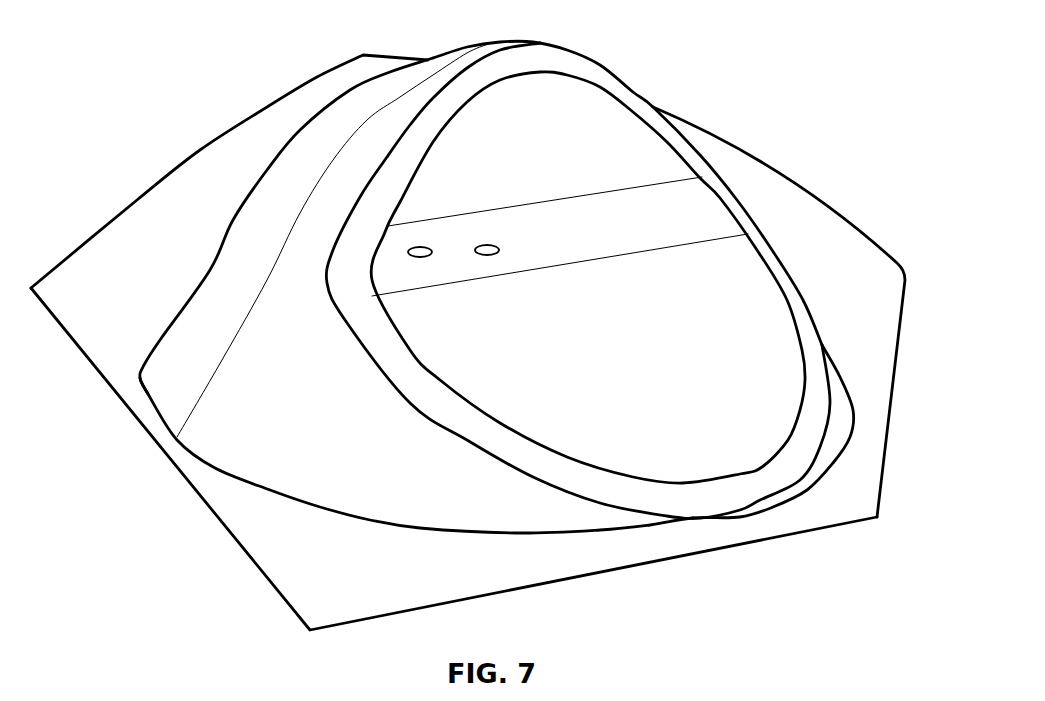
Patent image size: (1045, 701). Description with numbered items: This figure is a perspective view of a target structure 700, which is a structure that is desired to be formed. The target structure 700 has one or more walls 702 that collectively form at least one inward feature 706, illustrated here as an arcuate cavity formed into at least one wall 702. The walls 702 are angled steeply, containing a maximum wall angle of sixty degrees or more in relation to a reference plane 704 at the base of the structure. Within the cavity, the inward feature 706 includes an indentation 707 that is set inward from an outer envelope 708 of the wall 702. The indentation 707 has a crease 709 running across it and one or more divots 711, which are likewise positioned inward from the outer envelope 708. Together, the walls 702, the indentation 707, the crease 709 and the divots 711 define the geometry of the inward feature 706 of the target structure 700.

The target structure 700 is at (676, 54).
The walls 702 is at (372, 462).
The reference plane 704 is at (500, 563).
The inward feature 706 is at (690, 225).
The indentation 707 is at (643, 175).
The outer envelope 708 is at (812, 458).
The crease 709 is at (675, 215).
The divots 711 is at (420, 247).